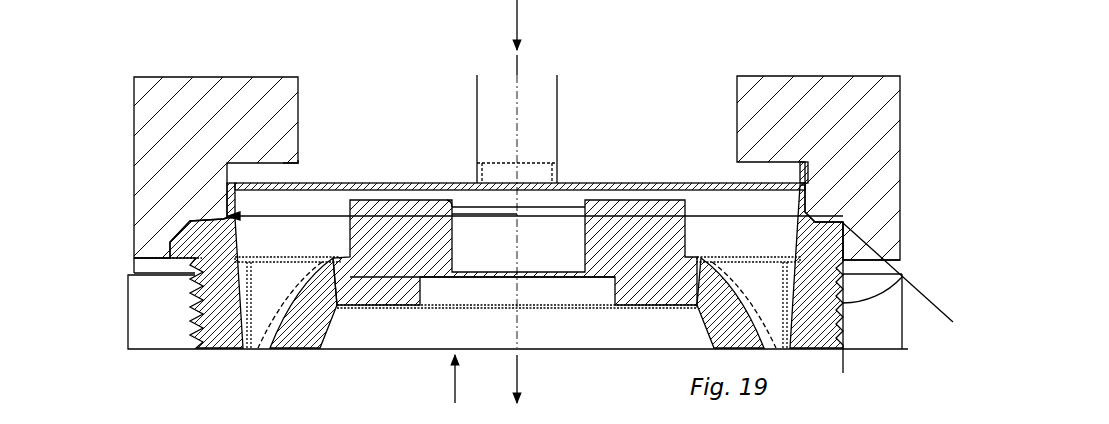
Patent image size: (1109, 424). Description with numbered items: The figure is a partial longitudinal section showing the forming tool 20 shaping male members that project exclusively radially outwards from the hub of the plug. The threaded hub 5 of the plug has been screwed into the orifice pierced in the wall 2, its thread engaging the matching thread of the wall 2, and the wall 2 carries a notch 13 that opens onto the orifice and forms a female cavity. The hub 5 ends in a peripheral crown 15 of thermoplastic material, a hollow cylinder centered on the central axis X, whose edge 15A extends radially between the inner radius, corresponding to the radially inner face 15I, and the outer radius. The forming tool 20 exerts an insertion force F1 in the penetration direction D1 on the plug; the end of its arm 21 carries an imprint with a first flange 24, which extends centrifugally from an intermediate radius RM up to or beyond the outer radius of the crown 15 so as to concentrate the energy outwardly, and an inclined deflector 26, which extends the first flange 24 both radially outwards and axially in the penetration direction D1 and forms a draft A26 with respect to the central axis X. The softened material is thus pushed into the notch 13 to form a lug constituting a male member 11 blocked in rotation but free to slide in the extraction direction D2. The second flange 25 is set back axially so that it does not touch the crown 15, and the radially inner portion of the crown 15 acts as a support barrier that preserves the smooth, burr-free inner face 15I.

The forming tool 20 is at (134, 74).
The arm 21 is at (210, 95).
The second flange 25 is at (283, 162).
The peripheral crown 15 is at (235, 200).
The edge of the crown 15A is at (804, 184).
The radially inner face of the crown 15I is at (242, 222).
The first flange 24 is at (221, 217).
The inclined deflector 26 is at (175, 237).
The male member 11 is at (178, 249).
The notch 13 is at (159, 266).
The wall 2 is at (148, 328).
The threaded hub 5 is at (223, 332).
The intermediate radius RM is at (535, 204).
The draft A26 is at (898, 297).
The insertion force F1 is at (518, 16).
The central axis X is at (531, 199).
The penetration direction D1 is at (520, 378).
The extraction direction D2 is at (455, 385).